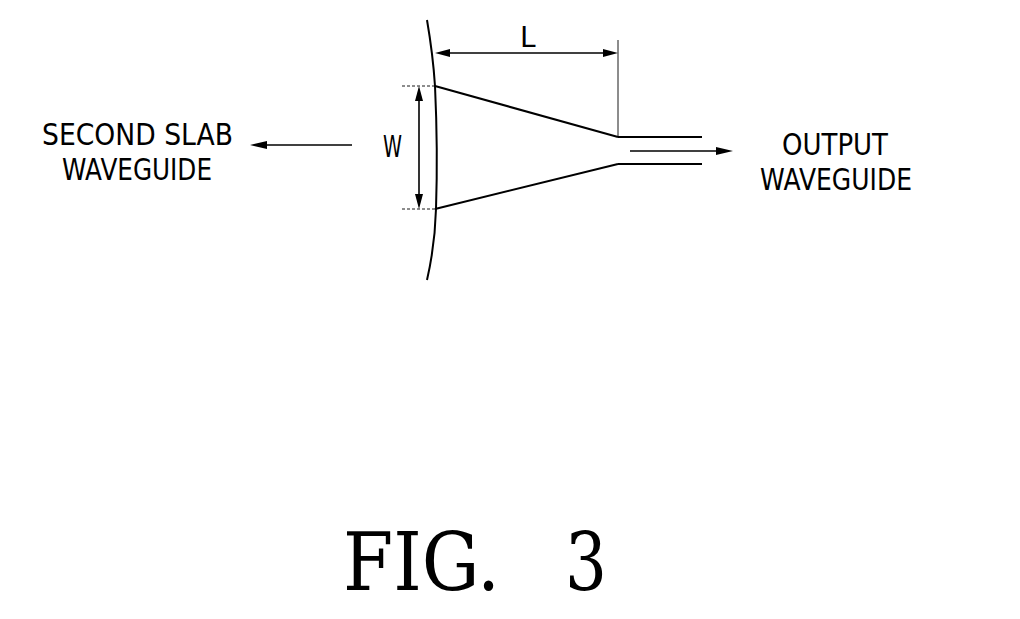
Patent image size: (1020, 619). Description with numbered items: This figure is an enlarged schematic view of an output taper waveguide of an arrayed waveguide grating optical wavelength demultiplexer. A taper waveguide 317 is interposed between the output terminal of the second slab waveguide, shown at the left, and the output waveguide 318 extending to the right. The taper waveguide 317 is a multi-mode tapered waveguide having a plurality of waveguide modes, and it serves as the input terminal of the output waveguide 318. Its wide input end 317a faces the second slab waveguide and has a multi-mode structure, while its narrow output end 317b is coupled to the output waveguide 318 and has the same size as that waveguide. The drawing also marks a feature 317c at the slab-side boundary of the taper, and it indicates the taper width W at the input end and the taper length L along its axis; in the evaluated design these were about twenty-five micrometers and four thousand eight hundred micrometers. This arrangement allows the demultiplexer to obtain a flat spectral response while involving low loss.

The taper waveguide 317 is at (526, 170).
The input end 317a is at (436, 207).
The output end 317b is at (617, 165).
The curved end face of tapered waveguide 317c is at (435, 210).
The output waveguide 318 is at (668, 137).